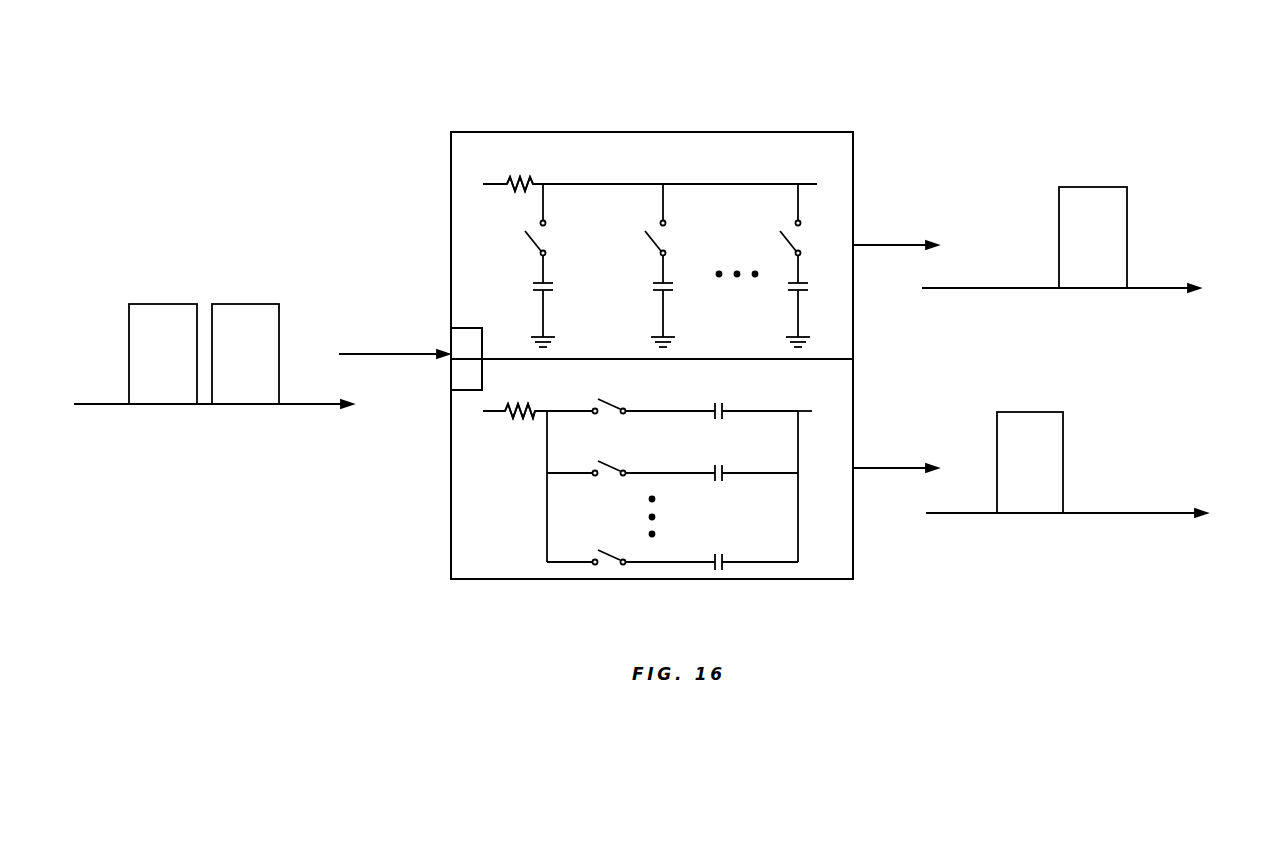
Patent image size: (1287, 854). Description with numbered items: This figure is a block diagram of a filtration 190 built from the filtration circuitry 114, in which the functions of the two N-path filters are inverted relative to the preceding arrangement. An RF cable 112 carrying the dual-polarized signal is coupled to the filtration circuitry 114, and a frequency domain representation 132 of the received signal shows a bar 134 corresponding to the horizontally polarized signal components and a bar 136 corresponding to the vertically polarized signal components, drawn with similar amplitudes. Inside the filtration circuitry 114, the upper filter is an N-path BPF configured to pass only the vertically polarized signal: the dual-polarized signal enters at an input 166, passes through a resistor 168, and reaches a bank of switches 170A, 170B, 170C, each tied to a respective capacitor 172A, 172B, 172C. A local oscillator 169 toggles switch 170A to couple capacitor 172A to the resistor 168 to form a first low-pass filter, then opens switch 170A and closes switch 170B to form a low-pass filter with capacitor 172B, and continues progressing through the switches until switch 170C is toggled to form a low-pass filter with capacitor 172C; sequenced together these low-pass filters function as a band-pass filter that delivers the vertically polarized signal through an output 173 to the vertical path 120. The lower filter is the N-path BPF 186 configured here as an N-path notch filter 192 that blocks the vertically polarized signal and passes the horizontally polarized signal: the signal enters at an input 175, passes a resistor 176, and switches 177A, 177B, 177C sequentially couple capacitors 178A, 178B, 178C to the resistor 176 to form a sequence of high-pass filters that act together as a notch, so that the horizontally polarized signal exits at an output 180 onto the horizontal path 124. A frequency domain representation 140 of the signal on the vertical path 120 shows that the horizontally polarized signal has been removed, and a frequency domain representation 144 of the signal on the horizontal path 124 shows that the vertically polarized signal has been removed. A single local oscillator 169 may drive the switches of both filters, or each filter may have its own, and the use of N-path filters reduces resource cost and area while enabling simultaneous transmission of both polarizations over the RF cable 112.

The filtration circuitry 114 is at (432, 103).
The input 166 is at (460, 175).
The N-path BPF 186 is at (652, 132).
The resistor 168 is at (517, 180).
The output 173 is at (842, 181).
The switch 170A is at (534, 241).
The switch 170B is at (655, 241).
The switch 170C is at (790, 241).
The capacitor 172A is at (536, 290).
The capacitor 172B is at (658, 290).
The capacitor 172C is at (794, 290).
The local oscillator 169 is at (466, 327).
The RF cable 112 is at (392, 358).
The frequency domain representation 132 is at (162, 245).
The bar 134 is at (163, 304).
The bar 136 is at (246, 304).
The input 175 is at (465, 425).
The resistor 176 is at (510, 416).
The switch 177A is at (608, 415).
The switch 177B is at (608, 477).
The switch 177C is at (608, 566).
The capacitor 178A is at (724, 418).
The capacitor 178B is at (724, 480).
The capacitor 178C is at (724, 569).
The output 180 is at (829, 402).
The N-path notch filter 192 is at (647, 499).
The vertical path 120 is at (886, 248).
The horizontal path 124 is at (886, 471).
The frequency domain representation 140 is at (1092, 187).
The frequency domain representation 144 is at (1030, 412).
The filtration 190 is at (1205, 98).